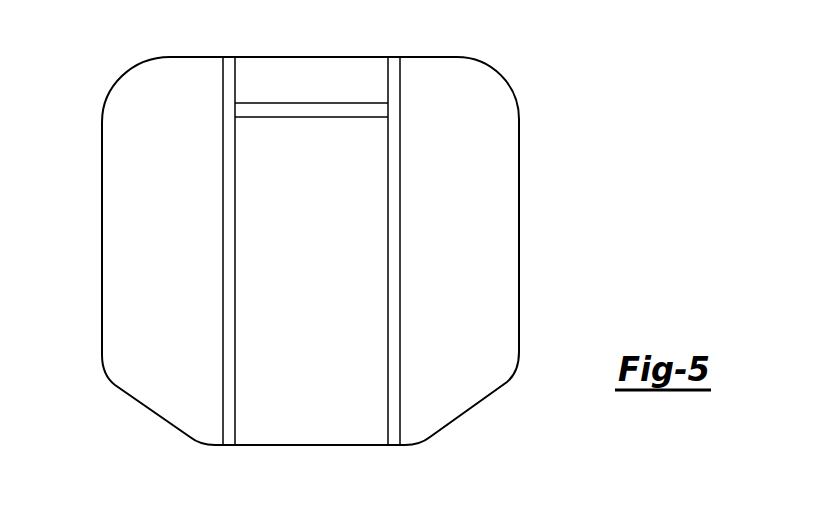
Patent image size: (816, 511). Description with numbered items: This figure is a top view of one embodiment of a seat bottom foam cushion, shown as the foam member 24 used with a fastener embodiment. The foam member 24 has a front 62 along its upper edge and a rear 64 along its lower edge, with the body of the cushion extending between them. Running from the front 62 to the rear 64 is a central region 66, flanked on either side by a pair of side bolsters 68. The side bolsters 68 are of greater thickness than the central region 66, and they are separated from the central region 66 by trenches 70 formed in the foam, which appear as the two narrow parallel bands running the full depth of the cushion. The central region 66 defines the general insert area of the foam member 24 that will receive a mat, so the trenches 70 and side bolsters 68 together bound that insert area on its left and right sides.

The foam member 24 is at (86, 149).
The front 62 is at (311, 57).
The rear 64 is at (335, 445).
The central region 66 is at (365, 229).
The side bolsters 68 is at (123, 240).
The trenches 70 is at (228, 73).